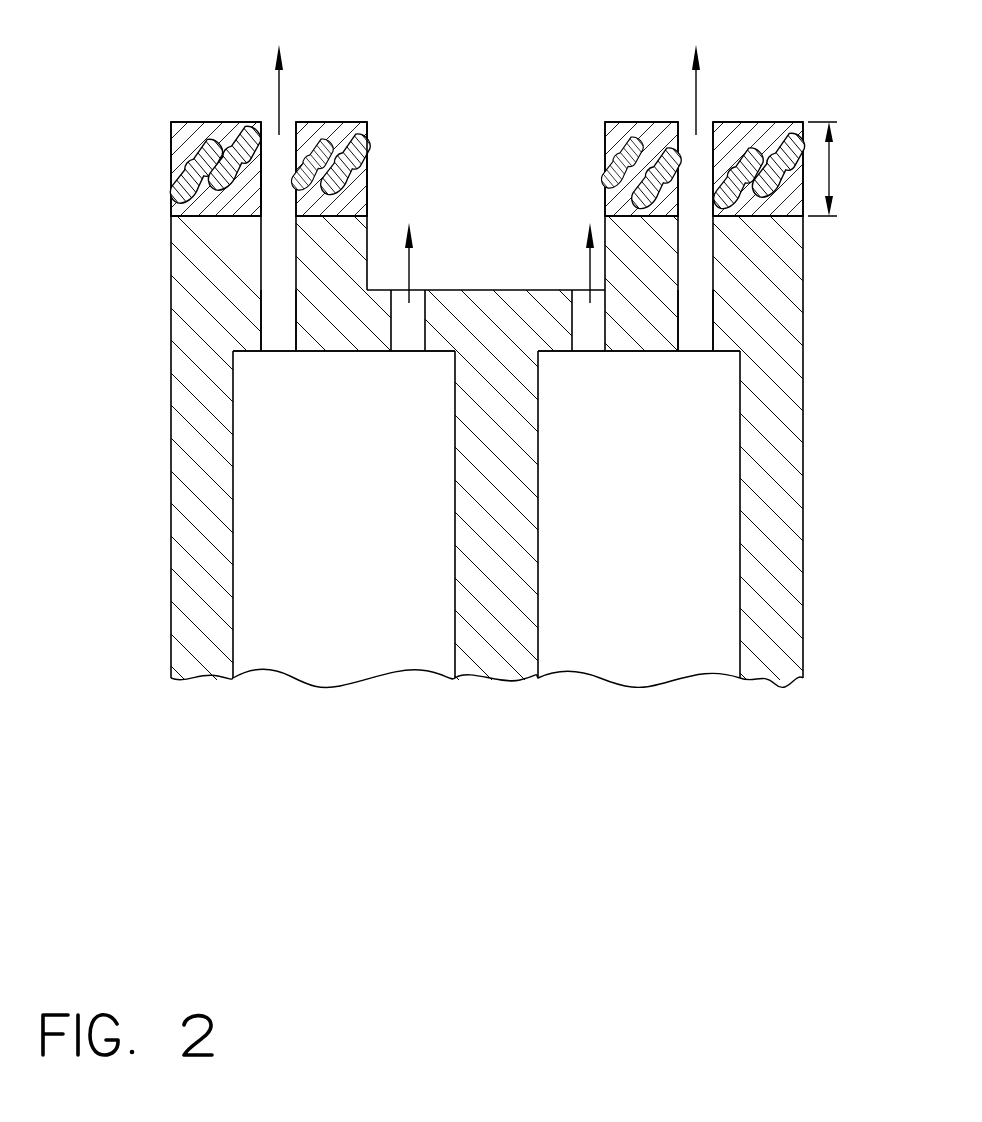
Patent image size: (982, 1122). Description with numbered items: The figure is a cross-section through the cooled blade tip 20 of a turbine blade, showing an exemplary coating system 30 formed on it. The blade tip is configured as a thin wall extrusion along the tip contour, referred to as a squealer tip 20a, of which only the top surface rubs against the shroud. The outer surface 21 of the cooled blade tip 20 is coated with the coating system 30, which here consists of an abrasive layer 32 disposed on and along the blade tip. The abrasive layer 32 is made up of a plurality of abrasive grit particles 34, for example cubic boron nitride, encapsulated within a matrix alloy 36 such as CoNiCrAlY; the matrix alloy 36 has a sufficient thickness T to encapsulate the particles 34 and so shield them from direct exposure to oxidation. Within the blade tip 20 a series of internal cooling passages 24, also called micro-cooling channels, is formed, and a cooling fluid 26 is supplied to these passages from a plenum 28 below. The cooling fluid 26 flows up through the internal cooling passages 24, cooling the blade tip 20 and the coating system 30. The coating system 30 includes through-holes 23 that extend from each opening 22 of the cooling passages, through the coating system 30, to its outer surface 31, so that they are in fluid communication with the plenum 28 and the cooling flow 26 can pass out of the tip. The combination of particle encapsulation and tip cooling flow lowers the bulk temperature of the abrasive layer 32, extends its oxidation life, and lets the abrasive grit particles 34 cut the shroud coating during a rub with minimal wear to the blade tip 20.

The cooled blade tip 20 is at (785, 268).
The squealer tip 20a is at (368, 153).
The outer surface of the cooled blade tip 21 is at (249, 210).
The opening 22 is at (280, 215).
The through-hole 23 is at (288, 121).
The internal cooling passage 24 is at (280, 310).
The cooling fluid 26 is at (283, 52).
The plenum 28 is at (358, 510).
The coating system 30 is at (150, 122).
The outer surface of the coating system 31 is at (200, 120).
The abrasive layer 32 is at (487, 169).
The abrasive grit particles 34 is at (775, 138).
The matrix alloy 36 is at (755, 122).
The thickness T is at (835, 173).